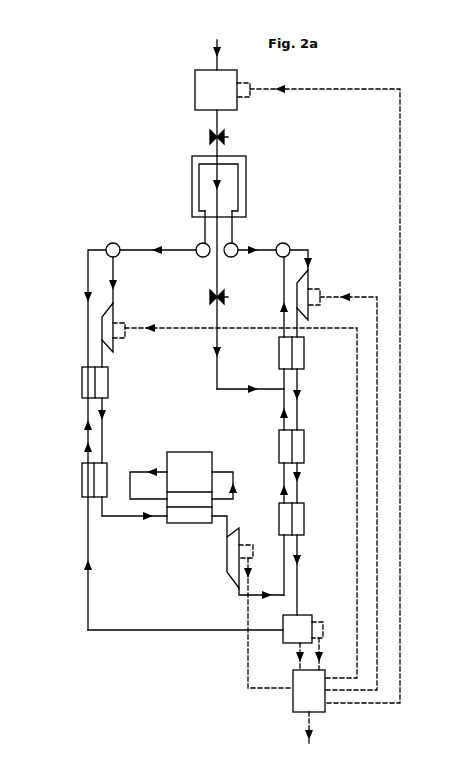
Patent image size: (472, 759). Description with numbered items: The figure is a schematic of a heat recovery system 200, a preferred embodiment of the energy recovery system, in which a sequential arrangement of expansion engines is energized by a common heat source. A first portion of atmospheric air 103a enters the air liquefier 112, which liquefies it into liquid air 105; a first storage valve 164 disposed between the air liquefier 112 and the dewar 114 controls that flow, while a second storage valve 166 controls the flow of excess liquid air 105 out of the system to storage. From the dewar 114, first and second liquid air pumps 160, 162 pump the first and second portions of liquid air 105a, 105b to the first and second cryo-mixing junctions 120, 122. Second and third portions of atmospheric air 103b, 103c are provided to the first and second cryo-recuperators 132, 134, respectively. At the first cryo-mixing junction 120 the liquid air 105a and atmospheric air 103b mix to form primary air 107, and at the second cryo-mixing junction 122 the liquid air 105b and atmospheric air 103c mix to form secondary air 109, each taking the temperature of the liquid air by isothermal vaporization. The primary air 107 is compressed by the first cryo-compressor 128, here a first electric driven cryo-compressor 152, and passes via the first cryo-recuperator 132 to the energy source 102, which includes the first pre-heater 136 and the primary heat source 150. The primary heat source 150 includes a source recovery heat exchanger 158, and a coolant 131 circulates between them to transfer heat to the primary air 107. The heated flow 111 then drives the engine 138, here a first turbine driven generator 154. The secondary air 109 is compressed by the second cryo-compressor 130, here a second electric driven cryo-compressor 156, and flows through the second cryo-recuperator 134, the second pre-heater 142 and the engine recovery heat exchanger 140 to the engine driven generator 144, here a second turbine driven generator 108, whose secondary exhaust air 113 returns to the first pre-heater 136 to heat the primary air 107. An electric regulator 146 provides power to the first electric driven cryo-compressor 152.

The system 200 is at (127, 145).
The first portion of atmospheric air 103a is at (212, 50).
The air liquefier 112 is at (202, 95).
The first storage valve 164 is at (210, 135).
The dewar 114 is at (243, 185).
The liquid air 105 is at (214, 185).
The second storage valve 166 is at (210, 297).
The first liquid air pump 160 is at (197, 246).
The second liquid air pump 162 is at (236, 246).
The first cryo-mixing junction 120 is at (107, 247).
The second cryo-mixing junction 122 is at (284, 243).
The first portion of liquid air 105a is at (160, 246).
The second portion of liquid air 105b is at (234, 257).
The second portion of atmospheric air 103b is at (84, 298).
The third portion of atmospheric air 103c is at (283, 300).
The secondary exhaust air 113 is at (84, 447).
The primary air 107 is at (109, 283).
The first cryo-compressor 128 is at (229, 490).
The first electric driven cryo-compressor 152 is at (115, 325).
The first cryo-recuperator 132 is at (84, 380).
The first pre-heater 136 is at (84, 480).
The energy source 102 is at (213, 475).
The primary heat source 150 is at (190, 470).
The source recovery heat exchanger 158 is at (200, 515).
The coolant 131 is at (157, 470).
The stream 111 is at (280, 415).
The engine 138 is at (234, 608).
The first turbine driven generator 154 is at (234, 565).
The secondary air 109 is at (311, 262).
The second cryo-compressor 130 is at (341, 480).
The second electric driven cryo-compressor 156 is at (310, 290).
The second cryo-recuperator 134 is at (281, 352).
The second pre-heater 142 is at (303, 445).
The engine recovery heat exchanger 140 is at (303, 520).
The engine driven generator 144 is at (315, 628).
The second turbine driven generator 108 is at (300, 628).
The electric regulator 146 is at (300, 695).